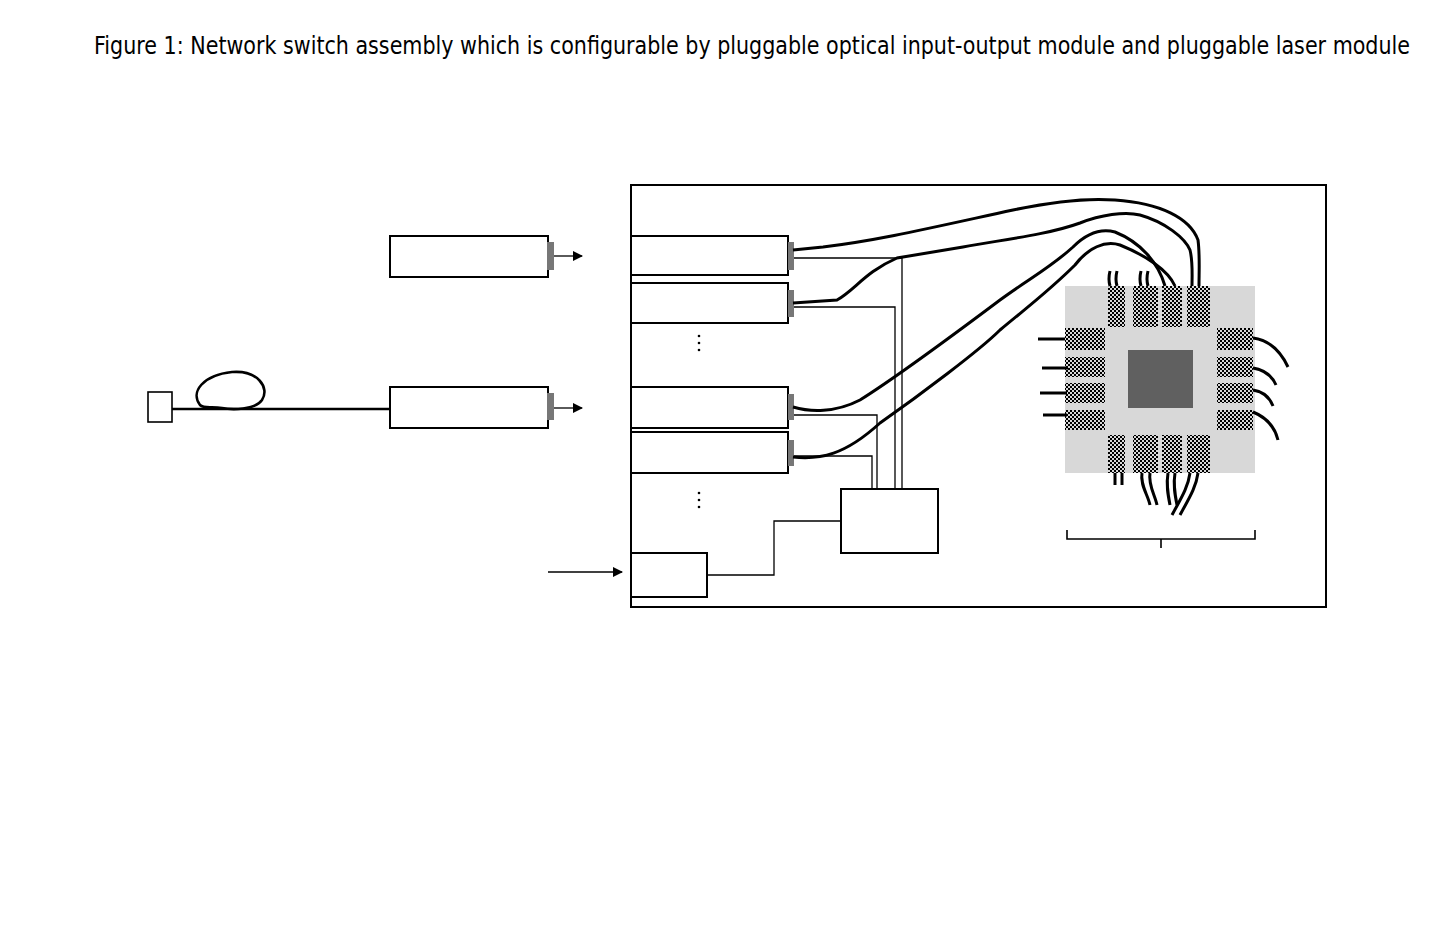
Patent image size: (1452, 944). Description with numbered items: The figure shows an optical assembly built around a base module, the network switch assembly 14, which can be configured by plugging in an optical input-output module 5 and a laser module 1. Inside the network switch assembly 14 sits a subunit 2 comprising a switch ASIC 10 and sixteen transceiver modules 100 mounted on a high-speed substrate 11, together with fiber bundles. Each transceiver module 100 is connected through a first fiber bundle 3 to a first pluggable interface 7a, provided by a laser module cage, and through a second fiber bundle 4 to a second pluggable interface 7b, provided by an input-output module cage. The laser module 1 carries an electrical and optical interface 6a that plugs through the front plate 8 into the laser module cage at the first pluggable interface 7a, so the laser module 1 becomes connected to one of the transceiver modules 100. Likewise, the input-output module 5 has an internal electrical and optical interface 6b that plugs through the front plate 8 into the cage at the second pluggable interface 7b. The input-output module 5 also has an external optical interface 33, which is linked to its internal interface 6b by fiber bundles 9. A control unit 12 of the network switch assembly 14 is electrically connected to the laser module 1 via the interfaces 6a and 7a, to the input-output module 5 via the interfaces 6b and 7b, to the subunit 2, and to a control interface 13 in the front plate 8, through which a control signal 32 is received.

The laser module 1 is at (390, 256).
The optical input-output module 5 is at (400, 428).
The pluggable interface of the laser module 6a is at (550, 247).
The pluggable internal interface of the input-output module 6b is at (550, 402).
The external optical interface 33 is at (152, 395).
The fiber bundle of the input-output module 9 is at (270, 412).
The switch assembly front plate 8 is at (631, 207).
The network switch assembly 14 is at (1048, 607).
The first pluggable interface of the base module 7a is at (790, 243).
The second pluggable interface of the base module 7b is at (792, 392).
The first fiber bundle 3 is at (1098, 198).
The second fiber bundle 4 is at (1045, 233).
The control unit 12 is at (887, 535).
The control interface 13 is at (652, 569).
The control signal 32 is at (564, 576).
The subunit 2 is at (1222, 418).
The transceiver module 100 is at (1212, 305).
The switch ASIC 10 is at (1162, 377).
The switch high-speed substrate 11 is at (1230, 453).